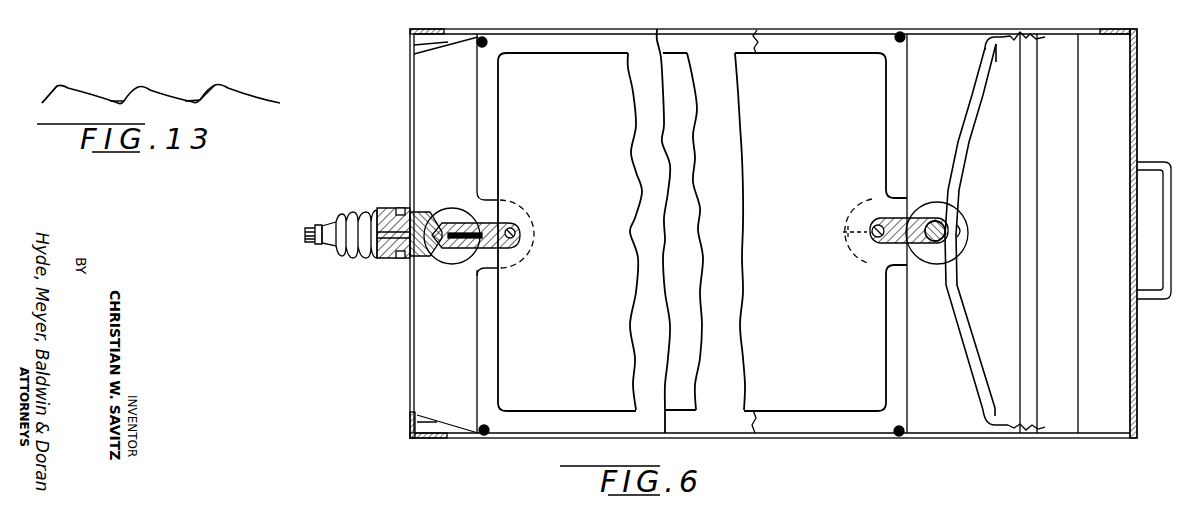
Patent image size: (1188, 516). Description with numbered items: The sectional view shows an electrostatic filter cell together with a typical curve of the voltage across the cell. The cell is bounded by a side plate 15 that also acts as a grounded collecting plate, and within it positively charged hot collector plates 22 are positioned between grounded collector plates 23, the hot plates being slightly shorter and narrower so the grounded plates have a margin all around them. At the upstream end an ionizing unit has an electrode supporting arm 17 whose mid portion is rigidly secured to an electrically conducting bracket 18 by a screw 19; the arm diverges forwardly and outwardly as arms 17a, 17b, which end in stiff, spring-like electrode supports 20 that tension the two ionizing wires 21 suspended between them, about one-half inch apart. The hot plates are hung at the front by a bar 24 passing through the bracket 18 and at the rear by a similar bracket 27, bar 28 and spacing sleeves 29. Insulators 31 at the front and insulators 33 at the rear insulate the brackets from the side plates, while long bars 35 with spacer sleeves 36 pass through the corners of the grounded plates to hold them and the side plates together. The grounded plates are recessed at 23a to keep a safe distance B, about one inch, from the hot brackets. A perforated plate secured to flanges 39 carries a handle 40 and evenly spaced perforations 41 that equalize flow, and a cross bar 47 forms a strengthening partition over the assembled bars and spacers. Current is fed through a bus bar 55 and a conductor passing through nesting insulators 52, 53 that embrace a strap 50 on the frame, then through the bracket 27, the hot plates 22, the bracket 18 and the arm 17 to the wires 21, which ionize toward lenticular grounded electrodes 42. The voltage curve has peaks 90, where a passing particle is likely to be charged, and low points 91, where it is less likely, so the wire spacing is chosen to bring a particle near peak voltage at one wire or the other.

In FIG. 6, the side plate 15 is at (772, 233).
In FIG. 6, the electrode supporting arm 17 is at (948, 170).
In FIG. 6, the arm 17a is at (985, 60).
In FIG. 6, the arm 17b is at (975, 375).
In FIG. 6, the electrically conducting bracket 18 is at (928, 244).
In FIG. 6, the screw 19 is at (958, 228).
In FIG. 6, the electrode supports 20 is at (1024, 445).
In FIG. 6, the ionizing wires 21 is at (1020, 195).
In FIG. 6, the hot collector plates 22 is at (702, 231).
In FIG. 6, the grounded collector plates 23 is at (657, 231).
In FIG. 6, the recess 23a is at (550, 208).
In FIG. 6, the bar 24 is at (879, 240).
In FIG. 6, the bracket 27 is at (470, 248).
In FIG. 6, the bar 28 is at (510, 239).
In FIG. 6, the spacing sleeves 29 is at (908, 97).
In FIG. 6, the insulators 31 is at (935, 221).
In FIG. 6, the insulators 33 is at (455, 208).
In FIG. 6, the bars 35 is at (884, 428).
In FIG. 6, the spacer sleeves 36 is at (899, 413).
In FIG. 6, the flanges 39 is at (1128, 72).
In FIG. 6, the handle 40 is at (1155, 162).
In FIG. 6, the perforations 41 is at (1138, 44).
In FIG. 6, the grounded electrodes 42 is at (1078, 344).
In FIG. 6, the cross bar 47 is at (903, 34).
In FIG. 6, the strap 50 is at (400, 258).
In FIG. 6, the rearwardly extending insulator 52 is at (356, 258).
In FIG. 6, the forwardly extending insulator 53 is at (424, 256).
In FIG. 6, the bus bar 55 is at (318, 224).
In FIG. 13, the peaks 90 is at (224, 76).
In FIG. 13, the low point 91 is at (190, 90).
In FIG. 6, the distance B is at (850, 243).